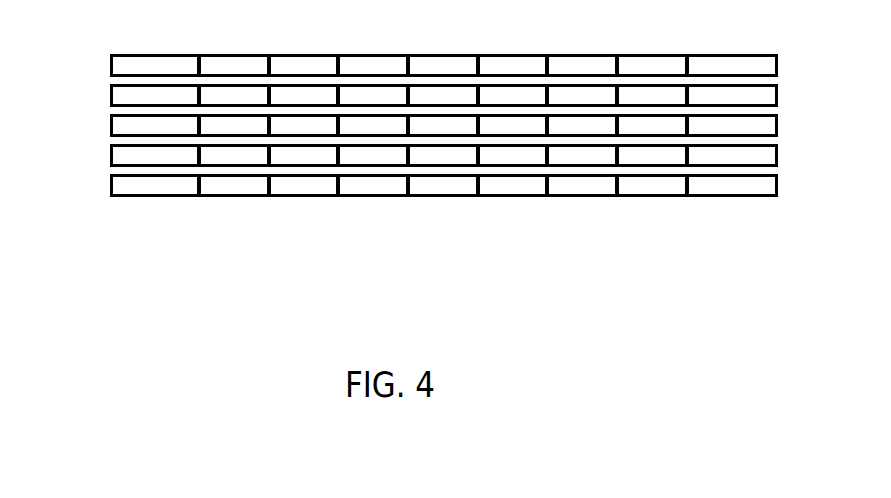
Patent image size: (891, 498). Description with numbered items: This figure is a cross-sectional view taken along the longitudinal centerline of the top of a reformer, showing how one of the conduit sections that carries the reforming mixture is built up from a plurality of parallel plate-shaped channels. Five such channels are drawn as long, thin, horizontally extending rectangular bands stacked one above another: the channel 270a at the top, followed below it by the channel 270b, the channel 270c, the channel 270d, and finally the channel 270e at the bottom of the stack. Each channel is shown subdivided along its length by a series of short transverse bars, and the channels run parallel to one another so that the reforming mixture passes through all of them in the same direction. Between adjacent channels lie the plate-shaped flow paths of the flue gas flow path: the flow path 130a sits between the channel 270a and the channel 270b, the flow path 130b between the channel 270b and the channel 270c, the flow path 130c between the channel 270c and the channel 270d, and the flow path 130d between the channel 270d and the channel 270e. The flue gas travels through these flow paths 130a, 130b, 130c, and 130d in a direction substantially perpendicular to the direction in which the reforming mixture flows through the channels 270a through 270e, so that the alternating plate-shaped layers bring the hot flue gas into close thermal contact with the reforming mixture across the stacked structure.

The plate-shaped flow path 130a is at (113, 80).
The plate-shaped flow path 130b is at (117, 110).
The plate-shaped flow path 130c is at (120, 140).
The plate-shaped flow path 130d is at (120, 170).
The channel 270a is at (777, 67).
The channel 270b is at (778, 98).
The channel 270c is at (772, 130).
The channel 270d is at (777, 158).
The channel 270e is at (777, 193).